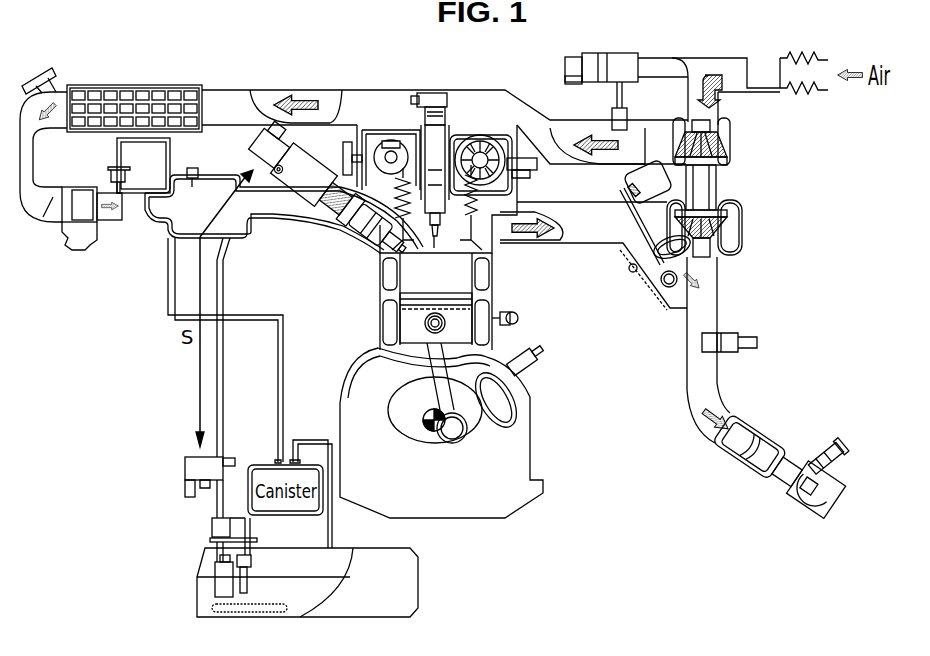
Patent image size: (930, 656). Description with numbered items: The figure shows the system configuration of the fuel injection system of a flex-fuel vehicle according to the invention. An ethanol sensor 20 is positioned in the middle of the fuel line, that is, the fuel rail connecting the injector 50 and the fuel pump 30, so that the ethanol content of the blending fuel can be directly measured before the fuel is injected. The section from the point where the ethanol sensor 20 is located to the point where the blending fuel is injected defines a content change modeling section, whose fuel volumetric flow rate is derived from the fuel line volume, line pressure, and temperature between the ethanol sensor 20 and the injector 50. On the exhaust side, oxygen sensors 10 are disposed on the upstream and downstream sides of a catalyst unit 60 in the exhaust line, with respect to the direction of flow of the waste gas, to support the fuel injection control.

The oxygen sensor 10 is at (833, 450).
The ethanol sensor 20 is at (197, 468).
The fuel pump 30 is at (223, 585).
The injector 50 is at (360, 222).
The catalyst unit 60 is at (743, 452).